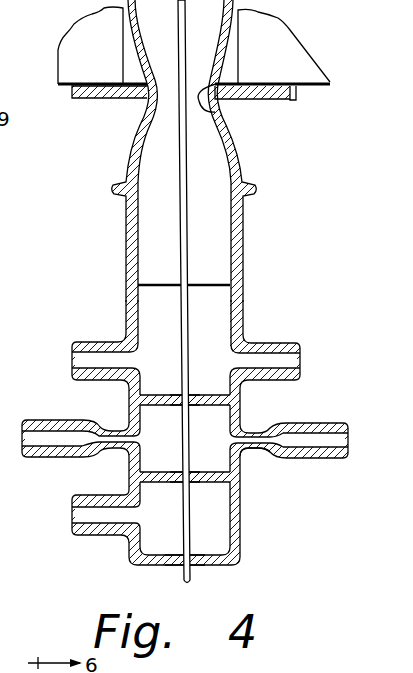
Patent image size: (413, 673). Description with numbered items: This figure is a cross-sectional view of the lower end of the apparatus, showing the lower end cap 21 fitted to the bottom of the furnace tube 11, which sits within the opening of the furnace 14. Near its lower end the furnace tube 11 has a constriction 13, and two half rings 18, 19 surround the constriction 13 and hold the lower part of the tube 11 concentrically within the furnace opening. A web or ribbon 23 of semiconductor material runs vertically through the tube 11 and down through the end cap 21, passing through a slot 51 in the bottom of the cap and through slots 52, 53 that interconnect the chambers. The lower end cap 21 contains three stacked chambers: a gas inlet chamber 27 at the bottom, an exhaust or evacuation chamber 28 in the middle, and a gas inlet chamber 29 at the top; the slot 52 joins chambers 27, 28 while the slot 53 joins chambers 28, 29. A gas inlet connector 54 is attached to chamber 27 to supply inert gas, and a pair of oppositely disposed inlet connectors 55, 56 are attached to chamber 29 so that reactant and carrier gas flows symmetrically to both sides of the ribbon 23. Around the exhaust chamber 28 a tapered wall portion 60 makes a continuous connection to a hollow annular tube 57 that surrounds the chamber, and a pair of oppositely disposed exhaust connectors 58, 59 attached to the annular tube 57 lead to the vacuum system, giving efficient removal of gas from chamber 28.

The furnace tube 11 is at (128, 24).
The constriction 13 is at (225, 115).
The furnace 14 is at (302, 58).
The half ring 18 is at (90, 100).
The half ring 19 is at (296, 100).
The lower end cap 21 is at (250, 296).
The web or ribbon 23 is at (191, 567).
The gas inlet chamber 27 is at (170, 527).
The exhaust or evacuation chamber 28 is at (168, 444).
The gas inlet chamber 29 is at (168, 323).
The slot 51 is at (181, 566).
The slot 52 is at (192, 470).
The slot 53 is at (189, 393).
The gas inlet connector 54 is at (82, 537).
The inlet connector 55 is at (78, 341).
The inlet connector 56 is at (290, 343).
The hollow annular tube 57 is at (88, 421).
The exhaust connector 58 is at (28, 421).
The exhaust connector 59 is at (337, 423).
The tapered wall portion 60 is at (248, 449).